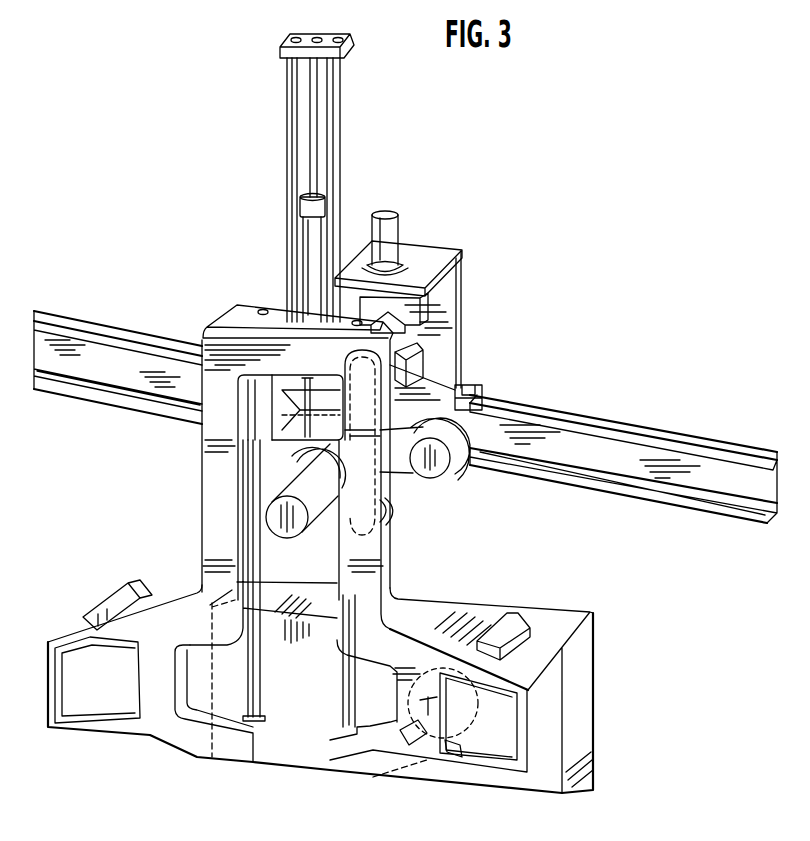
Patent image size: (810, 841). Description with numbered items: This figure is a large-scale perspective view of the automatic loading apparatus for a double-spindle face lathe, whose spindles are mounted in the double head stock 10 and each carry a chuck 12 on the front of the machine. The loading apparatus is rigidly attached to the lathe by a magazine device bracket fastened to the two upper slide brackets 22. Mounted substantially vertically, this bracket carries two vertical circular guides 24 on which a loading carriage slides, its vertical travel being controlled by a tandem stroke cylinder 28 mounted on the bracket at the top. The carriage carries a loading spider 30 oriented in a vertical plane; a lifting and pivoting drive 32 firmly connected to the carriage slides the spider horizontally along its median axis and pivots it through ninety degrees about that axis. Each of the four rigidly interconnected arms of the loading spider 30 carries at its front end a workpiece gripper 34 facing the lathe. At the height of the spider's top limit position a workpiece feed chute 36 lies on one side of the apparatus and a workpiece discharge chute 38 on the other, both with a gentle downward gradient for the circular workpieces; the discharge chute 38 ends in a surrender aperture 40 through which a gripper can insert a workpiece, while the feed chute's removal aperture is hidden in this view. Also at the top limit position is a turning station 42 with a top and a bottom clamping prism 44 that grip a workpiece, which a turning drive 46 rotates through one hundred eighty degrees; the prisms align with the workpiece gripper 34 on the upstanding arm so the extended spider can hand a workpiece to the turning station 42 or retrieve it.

The double head stock 10 is at (543, 777).
The chuck 12 is at (240, 757).
The upper slide brackets 22 is at (90, 613).
The vertical circular guides 24 is at (253, 677).
The tandem stroke cylinder 28 is at (308, 240).
The loading spider 30 is at (407, 430).
The lifting and pivoting drive 32 is at (273, 517).
The workpiece gripper 34 is at (305, 398).
The workpiece feed chute 36 is at (90, 358).
The workpiece discharge chute 38 is at (553, 437).
The surrender aperture 40 is at (475, 400).
The turning station 42 is at (443, 283).
The clamping prism 44 is at (360, 303).
The turning drive 46 is at (380, 235).